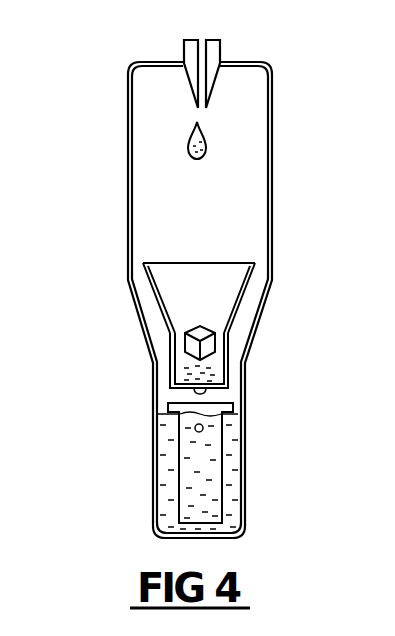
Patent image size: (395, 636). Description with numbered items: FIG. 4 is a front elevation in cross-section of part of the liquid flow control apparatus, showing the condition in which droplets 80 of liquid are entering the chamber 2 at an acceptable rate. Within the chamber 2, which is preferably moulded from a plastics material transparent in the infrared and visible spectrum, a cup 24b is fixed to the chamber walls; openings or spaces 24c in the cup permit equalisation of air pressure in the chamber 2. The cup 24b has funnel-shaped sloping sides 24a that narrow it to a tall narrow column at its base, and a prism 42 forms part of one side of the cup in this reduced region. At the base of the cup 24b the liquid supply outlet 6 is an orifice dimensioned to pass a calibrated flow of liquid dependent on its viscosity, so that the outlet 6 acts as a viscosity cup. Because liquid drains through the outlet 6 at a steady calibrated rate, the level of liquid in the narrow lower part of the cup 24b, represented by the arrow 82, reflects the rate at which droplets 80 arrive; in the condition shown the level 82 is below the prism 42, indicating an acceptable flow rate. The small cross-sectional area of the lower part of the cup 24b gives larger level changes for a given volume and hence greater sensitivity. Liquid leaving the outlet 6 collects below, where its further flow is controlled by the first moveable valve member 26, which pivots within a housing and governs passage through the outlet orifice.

The chamber 2 is at (200, 289).
The droplets 80 is at (207, 147).
The openings or spaces 24c is at (173, 264).
The sloping sides 24a is at (157, 305).
The cup 24b is at (174, 336).
The prism 42 is at (213, 340).
The arrow representing level of liquid 82 is at (226, 360).
The liquid supply outlet 6 is at (192, 391).
The first moveable valve member 26 is at (217, 483).